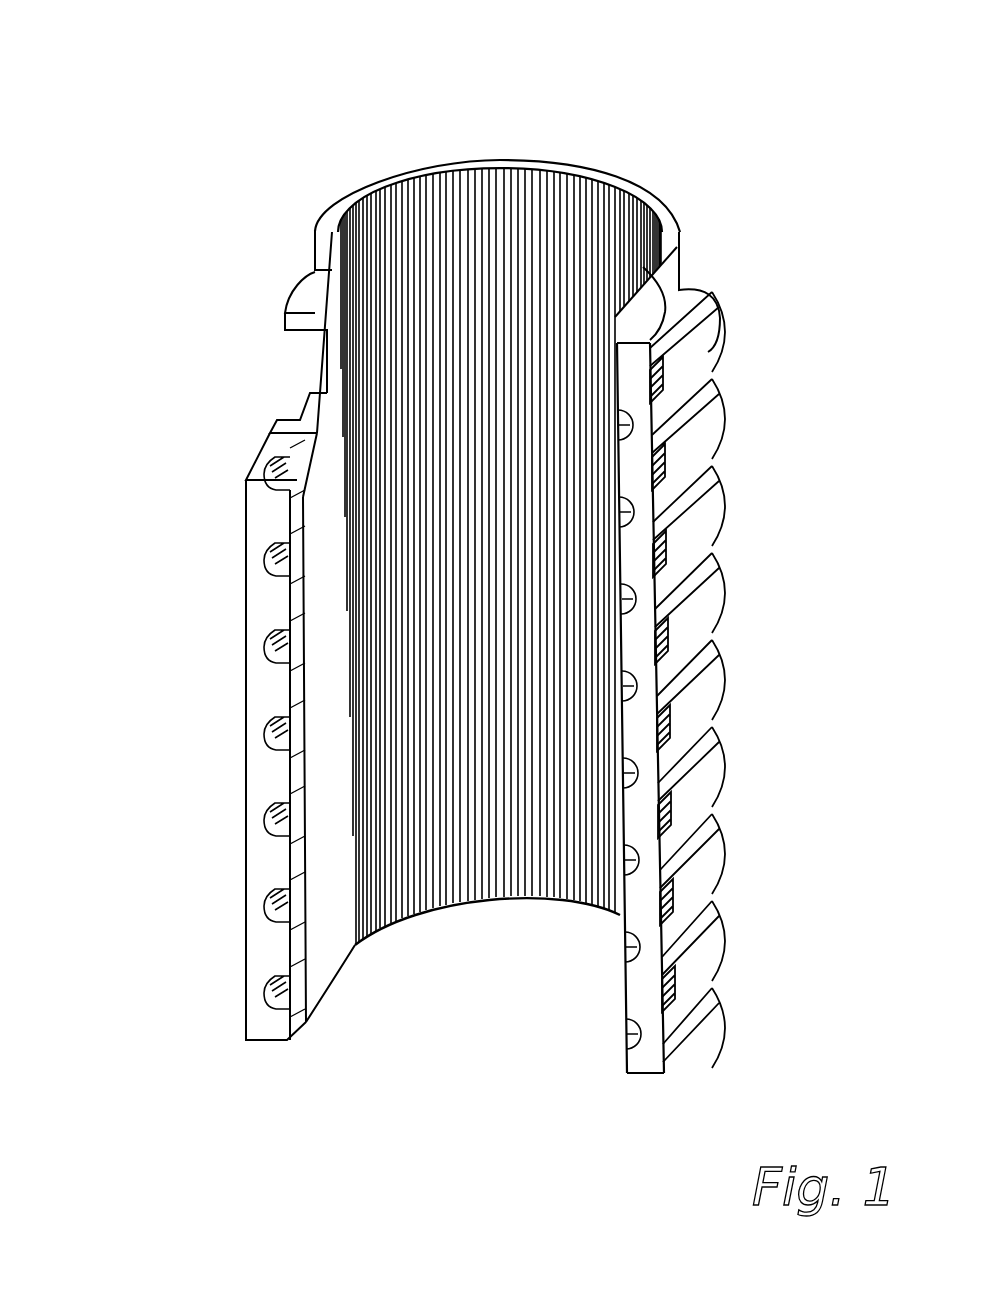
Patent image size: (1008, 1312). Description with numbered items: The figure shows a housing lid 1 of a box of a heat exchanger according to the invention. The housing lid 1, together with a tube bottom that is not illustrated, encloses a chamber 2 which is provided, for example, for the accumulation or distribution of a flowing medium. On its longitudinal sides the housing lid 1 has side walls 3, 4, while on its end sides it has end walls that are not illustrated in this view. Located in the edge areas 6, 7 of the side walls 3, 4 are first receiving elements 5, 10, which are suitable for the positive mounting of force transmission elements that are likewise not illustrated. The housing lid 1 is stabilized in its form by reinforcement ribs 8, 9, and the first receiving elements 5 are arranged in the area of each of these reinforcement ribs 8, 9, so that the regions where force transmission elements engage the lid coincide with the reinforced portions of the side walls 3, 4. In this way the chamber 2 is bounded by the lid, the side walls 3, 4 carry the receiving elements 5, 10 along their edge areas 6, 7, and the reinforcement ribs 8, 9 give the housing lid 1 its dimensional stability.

The housing lid 1 is at (235, 172).
The chamber 2 is at (485, 980).
The side wall 3 is at (322, 372).
The side wall 4 is at (652, 262).
The first receiving element 5 is at (283, 988).
The edge area 6 is at (242, 483).
The edge area 7 is at (668, 1052).
The reinforcement rib 8 is at (292, 410).
The reinforcement rib 9 is at (705, 828).
The first receiving element 10 is at (624, 950).